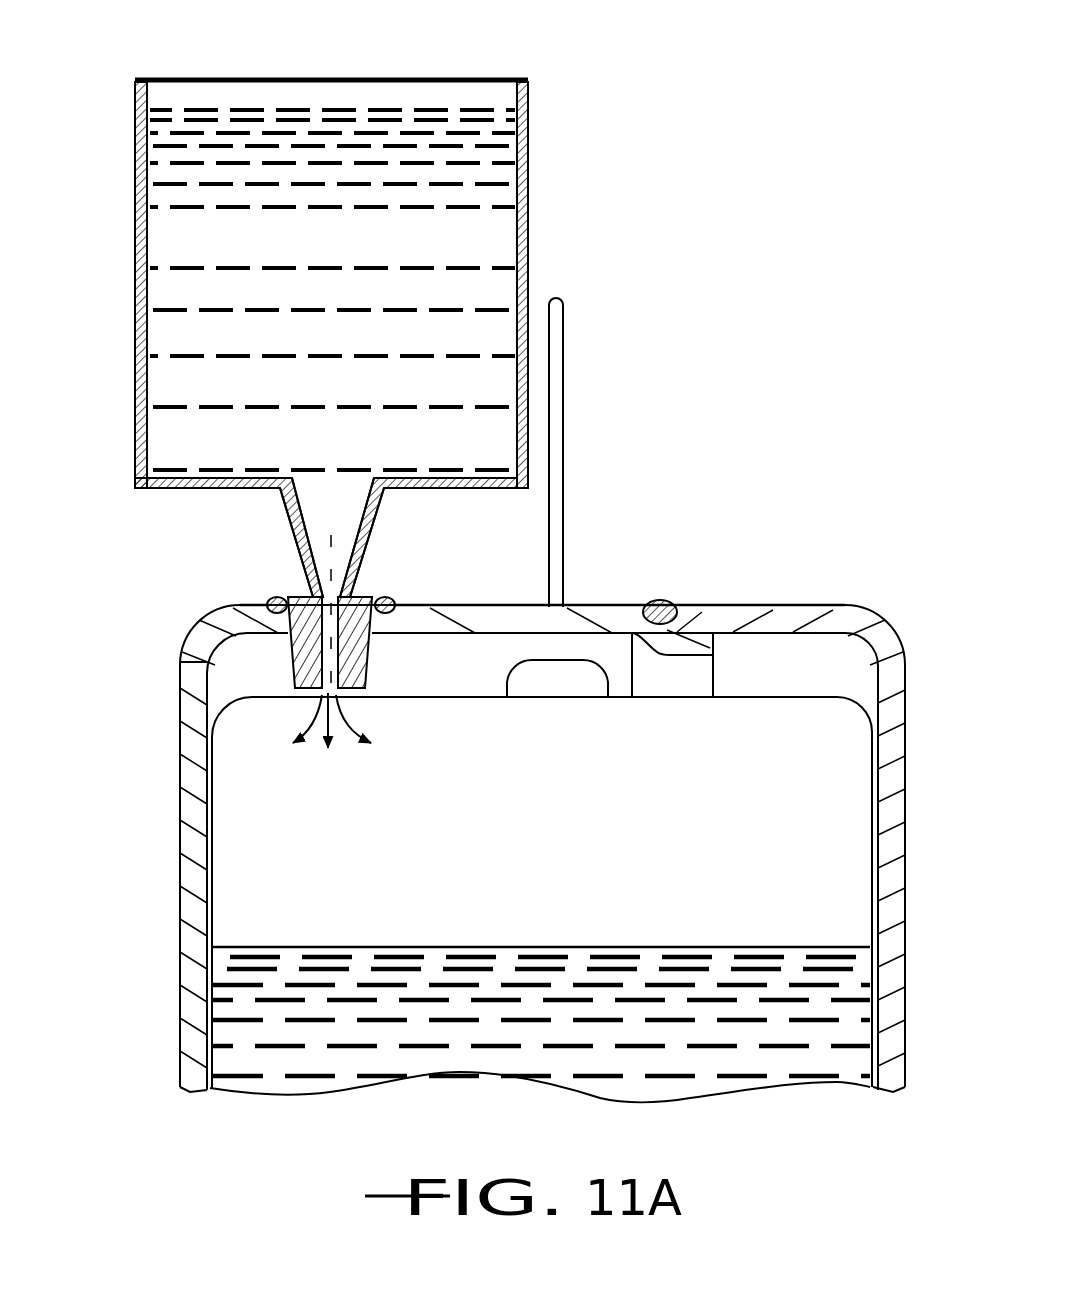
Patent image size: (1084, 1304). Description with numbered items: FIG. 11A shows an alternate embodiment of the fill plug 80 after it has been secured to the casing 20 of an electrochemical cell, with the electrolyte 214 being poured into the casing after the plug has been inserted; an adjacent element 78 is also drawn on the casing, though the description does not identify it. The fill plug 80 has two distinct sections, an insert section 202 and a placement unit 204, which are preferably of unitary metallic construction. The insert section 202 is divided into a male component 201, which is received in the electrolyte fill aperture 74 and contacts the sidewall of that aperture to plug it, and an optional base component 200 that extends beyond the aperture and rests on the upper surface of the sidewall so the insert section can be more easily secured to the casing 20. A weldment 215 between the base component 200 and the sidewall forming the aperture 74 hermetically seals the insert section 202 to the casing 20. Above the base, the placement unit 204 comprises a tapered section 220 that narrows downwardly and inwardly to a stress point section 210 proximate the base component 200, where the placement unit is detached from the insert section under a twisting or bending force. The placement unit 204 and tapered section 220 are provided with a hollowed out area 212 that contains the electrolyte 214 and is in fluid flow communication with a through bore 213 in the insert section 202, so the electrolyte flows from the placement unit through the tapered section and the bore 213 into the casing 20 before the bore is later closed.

The casing 20 is at (753, 580).
The electrolyte fill aperture 74 is at (288, 643).
The vent rod 78 is at (566, 350).
The fill plug 80 is at (582, 245).
The base component 200 is at (366, 600).
The male component 201 is at (371, 630).
The insert section 202 is at (291, 590).
The placement unit 204 is at (530, 185).
The stress point section 210 is at (317, 596).
The hollowed out area 212 is at (384, 285).
The through bore 213 is at (343, 652).
The electrolyte 214 is at (328, 102).
The weldment 215 is at (266, 600).
The tapered section 220 is at (385, 494).